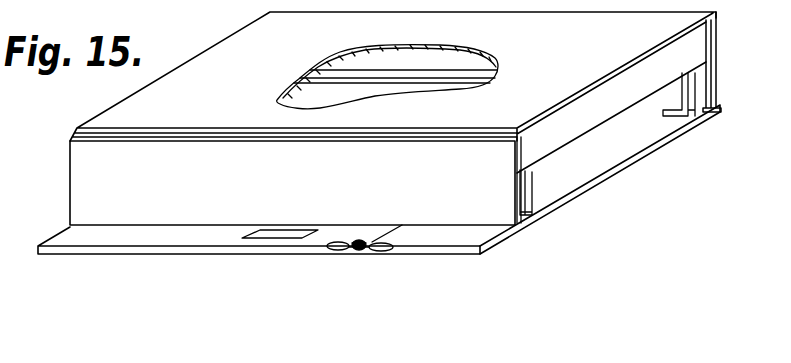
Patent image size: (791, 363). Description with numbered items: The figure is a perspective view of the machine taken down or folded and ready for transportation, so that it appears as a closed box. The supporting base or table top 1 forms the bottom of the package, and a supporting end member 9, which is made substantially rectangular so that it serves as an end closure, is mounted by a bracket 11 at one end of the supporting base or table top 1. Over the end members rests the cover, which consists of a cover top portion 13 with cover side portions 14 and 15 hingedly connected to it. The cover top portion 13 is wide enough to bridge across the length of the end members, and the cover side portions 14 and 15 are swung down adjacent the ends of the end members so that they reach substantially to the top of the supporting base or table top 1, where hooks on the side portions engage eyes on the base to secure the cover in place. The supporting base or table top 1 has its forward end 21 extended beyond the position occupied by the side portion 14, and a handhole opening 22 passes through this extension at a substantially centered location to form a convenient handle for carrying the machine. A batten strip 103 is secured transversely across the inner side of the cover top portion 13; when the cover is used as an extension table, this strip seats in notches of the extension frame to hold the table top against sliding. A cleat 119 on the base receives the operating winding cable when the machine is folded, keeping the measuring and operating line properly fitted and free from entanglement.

The supporting base or table top 1 is at (627, 162).
The supporting end member 9 is at (611, 142).
The bracket 11 is at (532, 193).
The cover top portion 13 is at (393, 76).
The cover side portion 14 is at (292, 183).
The cover side portion 15 is at (718, 40).
The forward end 21 is at (427, 238).
The handhole opening 22 is at (275, 232).
The batten strip 103 is at (327, 78).
The cleat 119 is at (337, 253).